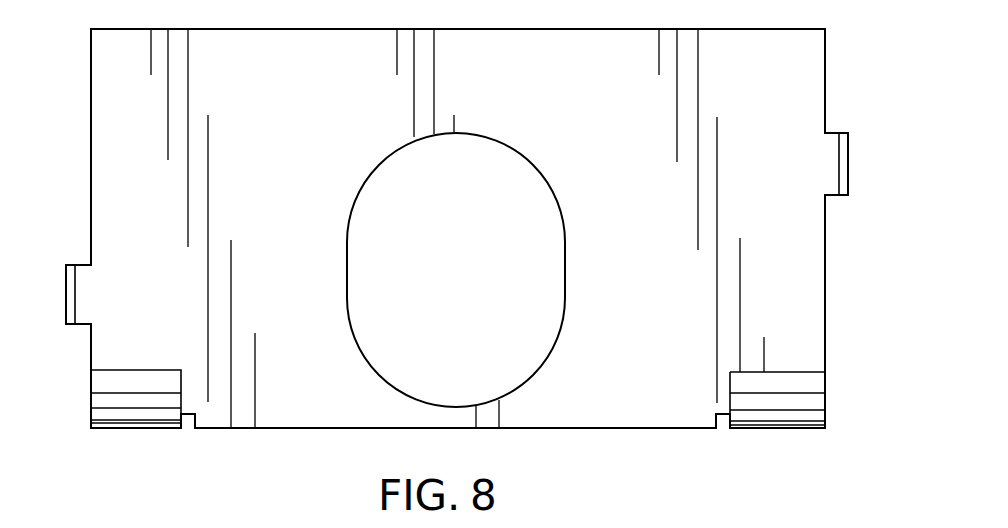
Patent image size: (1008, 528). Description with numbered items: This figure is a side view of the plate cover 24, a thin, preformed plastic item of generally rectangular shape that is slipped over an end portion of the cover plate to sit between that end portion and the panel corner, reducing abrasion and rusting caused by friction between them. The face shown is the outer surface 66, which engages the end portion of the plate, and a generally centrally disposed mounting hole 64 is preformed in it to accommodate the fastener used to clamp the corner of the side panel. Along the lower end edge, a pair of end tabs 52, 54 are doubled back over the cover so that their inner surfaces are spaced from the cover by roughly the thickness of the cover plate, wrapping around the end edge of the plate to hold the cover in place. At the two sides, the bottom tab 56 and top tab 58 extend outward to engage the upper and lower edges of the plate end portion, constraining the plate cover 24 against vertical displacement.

The plate cover 24 is at (624, 105).
The end tab 52 is at (139, 408).
The end tab 54 is at (777, 413).
The bottom tab 56 is at (848, 160).
The top tab 58 is at (63, 302).
The mounting hole 64 is at (347, 300).
The outer surface 66 is at (662, 251).